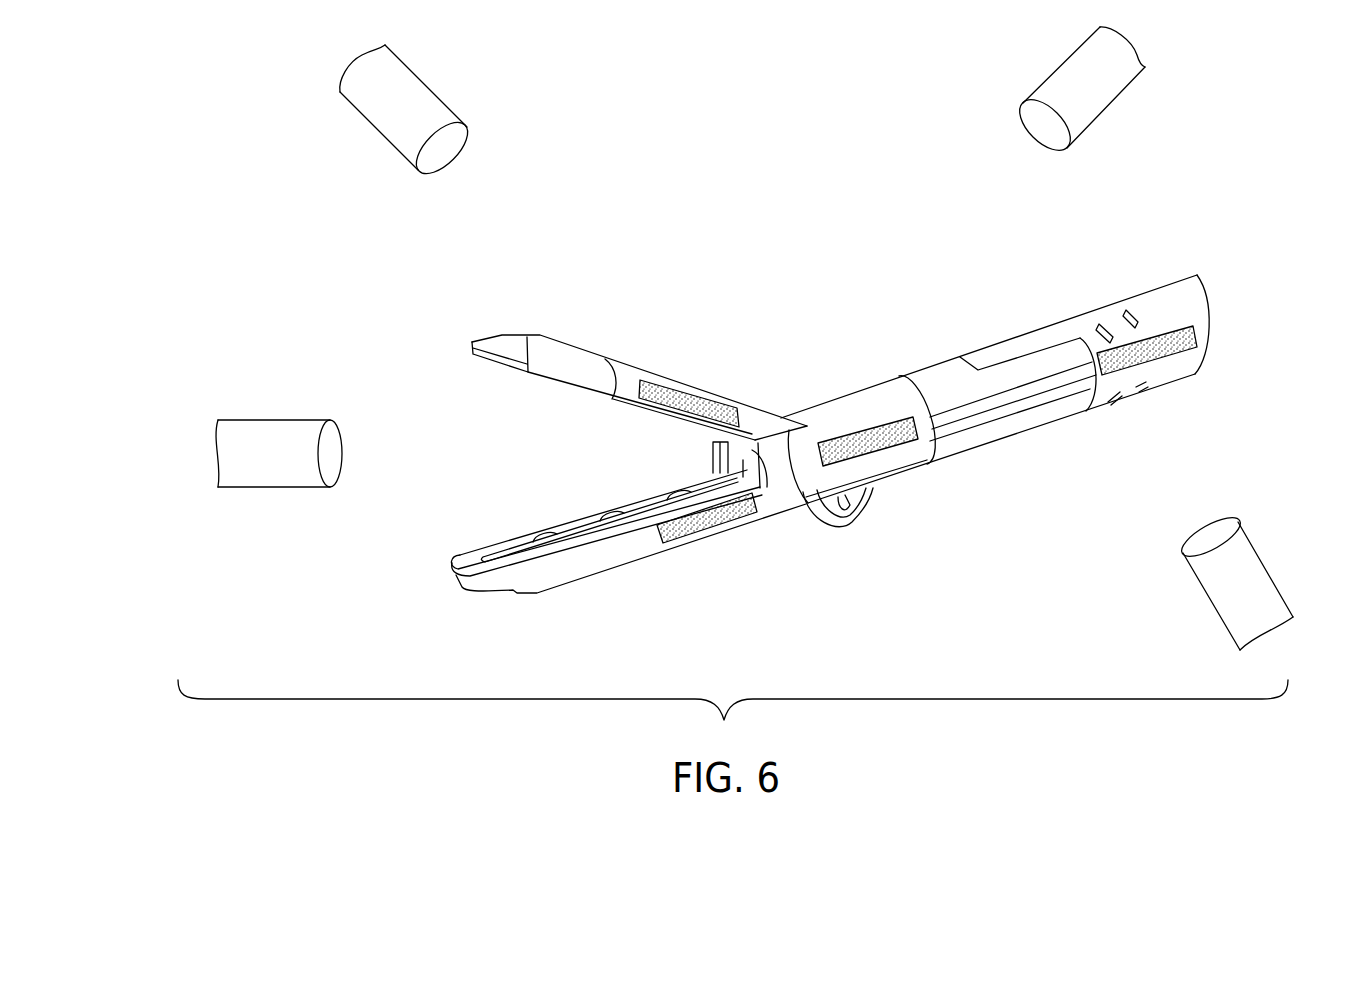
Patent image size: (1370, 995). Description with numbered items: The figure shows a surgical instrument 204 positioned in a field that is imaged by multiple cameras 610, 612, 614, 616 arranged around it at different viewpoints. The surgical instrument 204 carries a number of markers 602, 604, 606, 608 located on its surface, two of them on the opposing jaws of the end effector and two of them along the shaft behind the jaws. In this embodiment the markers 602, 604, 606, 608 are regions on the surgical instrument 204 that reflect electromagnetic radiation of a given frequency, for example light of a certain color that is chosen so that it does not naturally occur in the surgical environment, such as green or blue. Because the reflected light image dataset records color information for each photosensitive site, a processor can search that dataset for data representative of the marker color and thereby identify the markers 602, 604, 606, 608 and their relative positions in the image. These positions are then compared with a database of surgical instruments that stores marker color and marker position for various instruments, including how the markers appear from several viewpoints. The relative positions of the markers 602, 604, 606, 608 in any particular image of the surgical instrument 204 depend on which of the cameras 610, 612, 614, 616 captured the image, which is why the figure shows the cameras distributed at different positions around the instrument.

The surgical instrument 204 is at (795, 302).
The marker 602 is at (707, 397).
The marker 604 is at (713, 532).
The marker 606 is at (855, 425).
The marker 608 is at (1158, 332).
The camera 610 is at (437, 92).
The camera 612 is at (272, 420).
The camera 614 is at (1117, 103).
The camera 616 is at (1267, 568).